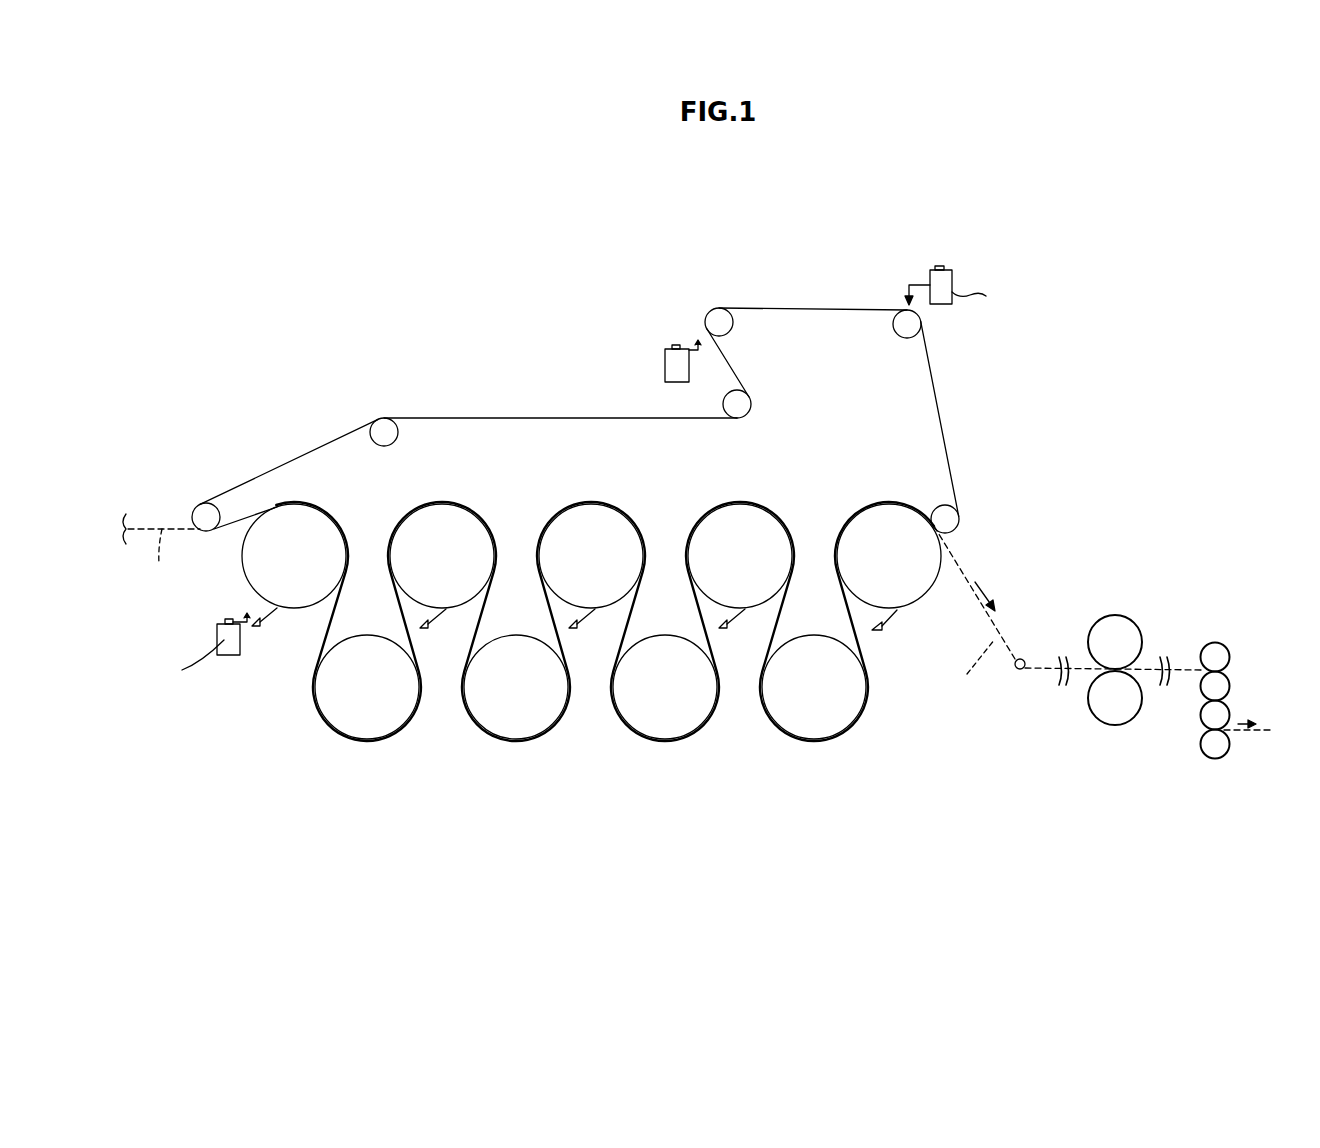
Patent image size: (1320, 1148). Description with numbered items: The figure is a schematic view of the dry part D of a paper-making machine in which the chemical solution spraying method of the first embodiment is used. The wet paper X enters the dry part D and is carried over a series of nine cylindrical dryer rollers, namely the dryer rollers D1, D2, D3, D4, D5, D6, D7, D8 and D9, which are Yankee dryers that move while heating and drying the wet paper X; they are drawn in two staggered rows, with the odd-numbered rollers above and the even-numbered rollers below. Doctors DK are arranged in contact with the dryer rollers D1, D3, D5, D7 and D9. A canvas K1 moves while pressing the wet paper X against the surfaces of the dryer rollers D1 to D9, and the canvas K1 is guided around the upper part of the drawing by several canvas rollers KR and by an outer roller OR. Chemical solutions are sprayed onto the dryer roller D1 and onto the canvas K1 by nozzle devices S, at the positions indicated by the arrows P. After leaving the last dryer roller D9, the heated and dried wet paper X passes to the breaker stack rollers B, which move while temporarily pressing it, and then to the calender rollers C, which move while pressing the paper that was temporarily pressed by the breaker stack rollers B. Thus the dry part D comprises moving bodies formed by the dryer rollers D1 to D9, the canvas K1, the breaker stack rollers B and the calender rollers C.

The dry part D is at (744, 702).
The dryer roller D1 is at (275, 569).
The dryer roller D2 is at (354, 701).
The dryer roller D3 is at (424, 569).
The dryer roller D4 is at (502, 701).
The dryer roller D5 is at (571, 569).
The dryer roller D6 is at (651, 701).
The dryer roller D7 is at (725, 563).
The dryer roller D8 is at (799, 701).
The dryer roller D9 is at (889, 556).
The canvas rollers KR is at (201, 511).
The canvas K1 is at (290, 457).
The outer roller OR is at (738, 403).
The arrows P is at (584, 450).
The nozzle devices S is at (585, 488).
The doctors DK is at (254, 626).
The wet paper X is at (662, 611).
The breaker stack rollers B is at (1122, 627).
The calender rollers C is at (1215, 650).